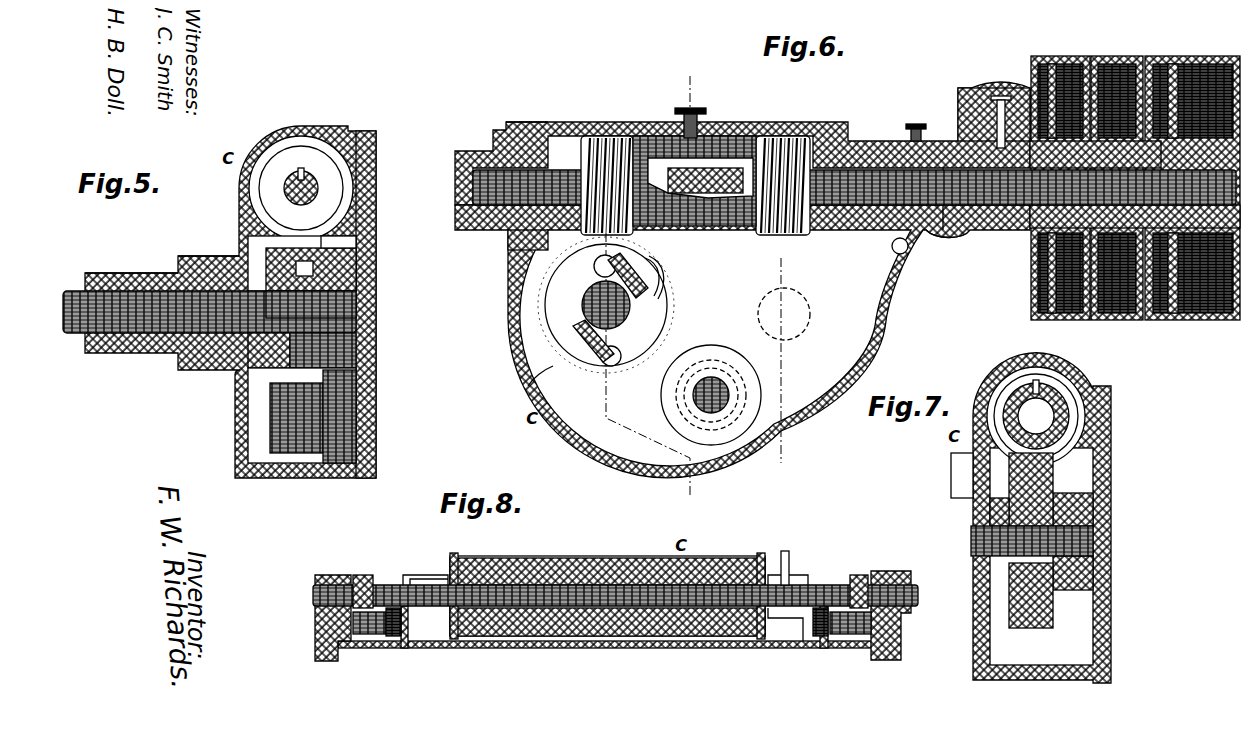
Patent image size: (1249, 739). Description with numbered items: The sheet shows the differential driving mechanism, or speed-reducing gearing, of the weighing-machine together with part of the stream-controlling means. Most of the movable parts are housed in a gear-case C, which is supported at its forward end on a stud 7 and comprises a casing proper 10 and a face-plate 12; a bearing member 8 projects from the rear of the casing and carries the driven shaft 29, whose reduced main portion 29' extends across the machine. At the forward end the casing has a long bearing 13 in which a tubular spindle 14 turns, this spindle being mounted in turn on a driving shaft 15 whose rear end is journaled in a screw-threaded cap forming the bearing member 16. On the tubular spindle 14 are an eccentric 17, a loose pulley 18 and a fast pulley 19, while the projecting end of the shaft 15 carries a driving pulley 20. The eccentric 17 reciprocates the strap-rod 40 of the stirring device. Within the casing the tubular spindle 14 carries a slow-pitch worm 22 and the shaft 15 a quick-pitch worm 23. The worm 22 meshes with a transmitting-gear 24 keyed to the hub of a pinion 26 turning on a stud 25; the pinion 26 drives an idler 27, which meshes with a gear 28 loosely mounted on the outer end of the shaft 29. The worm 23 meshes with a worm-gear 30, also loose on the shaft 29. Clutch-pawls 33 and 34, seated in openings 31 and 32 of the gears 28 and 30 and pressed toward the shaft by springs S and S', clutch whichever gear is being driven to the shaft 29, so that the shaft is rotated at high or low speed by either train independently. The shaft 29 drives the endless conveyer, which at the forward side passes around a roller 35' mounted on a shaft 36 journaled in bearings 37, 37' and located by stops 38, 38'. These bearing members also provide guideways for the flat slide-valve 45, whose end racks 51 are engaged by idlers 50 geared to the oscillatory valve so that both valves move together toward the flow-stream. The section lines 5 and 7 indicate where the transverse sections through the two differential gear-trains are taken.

In FIG. 6, the section line 5 is at (656, 285).
In FIG. 6, the stud 7 is at (772, 128).
In FIG. 5, the bearing member 8 is at (172, 250).
In FIG. 5, the casing proper 10 is at (231, 192).
In FIG. 6, the casing proper 10 is at (805, 408).
In FIG. 7, the casing proper 10 is at (960, 474).
In FIG. 5, the face-plate 12 is at (368, 402).
In FIG. 7, the face-plate 12 is at (1103, 455).
In FIG. 6, the long bearing 13 is at (890, 134).
In FIG. 6, the tubular spindle 14 is at (937, 160).
In FIG. 7, the tubular spindle 14 is at (1062, 408).
In FIG. 5, the driving shaft 15 is at (305, 168).
In FIG. 6, the driving shaft 15 is at (935, 230).
In FIG. 7, the driving shaft 15 is at (1040, 385).
In FIG. 6, the bearing member 16 is at (512, 134).
In FIG. 6, the eccentric 17 is at (1004, 94).
In FIG. 6, the loose pulley 18 is at (1052, 48).
In FIG. 6, the fast pulley 19 is at (1110, 48).
In FIG. 6, the driving pulley 20 is at (1180, 50).
In FIG. 6, the worm 22 is at (758, 270).
In FIG. 7, the worm 22 is at (1062, 390).
In FIG. 5, the worm 23 is at (315, 178).
In FIG. 6, the worm 23 is at (598, 126).
In FIG. 6, the transmitting-gear 24 is at (866, 286).
In FIG. 7, the transmitting-gear 24 is at (1045, 466).
In FIG. 6, the stud 25 is at (805, 306).
In FIG. 7, the stud 25 is at (1085, 522).
In FIG. 6, the pinion 26 is at (830, 335).
In FIG. 7, the pinion 26 is at (1085, 492).
In FIG. 5, the idler gear 27 is at (330, 456).
In FIG. 6, the idler gear 27 is at (710, 426).
In FIG. 5, the gear 28 is at (306, 261).
In FIG. 5, the driven shaft 29 is at (338, 300).
In FIG. 6, the driven shaft 29 is at (570, 305).
In FIG. 5, the reduced portion of shaft 29' is at (209, 336).
In FIG. 5, the worm-gear 30 is at (228, 386).
In FIG. 6, the worm-gear 30 is at (500, 250).
In FIG. 5, the opening 31 is at (348, 355).
In FIG. 6, the opening 31 is at (532, 330).
In FIG. 5, the opening 32 is at (348, 236).
In FIG. 6, the opening 32 is at (622, 268).
In FIG. 6, the clutch member 33 is at (600, 346).
In FIG. 6, the clutch member 34 is at (606, 305).
In FIG. 8, the roller 35' is at (607, 584).
In FIG. 8, the shaft 36 is at (421, 577).
In FIG. 8, the bearing 37 is at (314, 618).
In FIG. 8, the bearing 37' is at (911, 615).
In FIG. 8, the stop 38 is at (370, 576).
In FIG. 8, the stop 38' is at (829, 576).
In FIG. 6, the strap-rod 40 is at (992, 226).
In FIG. 8, the slide-valve 45 is at (575, 641).
In FIG. 8, the idlers 50 is at (385, 628).
In FIG. 8, the racks 51 is at (396, 640).
In FIG. 8, the gear-case C is at (615, 595).
In FIG. 6, the spring S is at (522, 385).
In FIG. 6, the spring S' is at (674, 271).